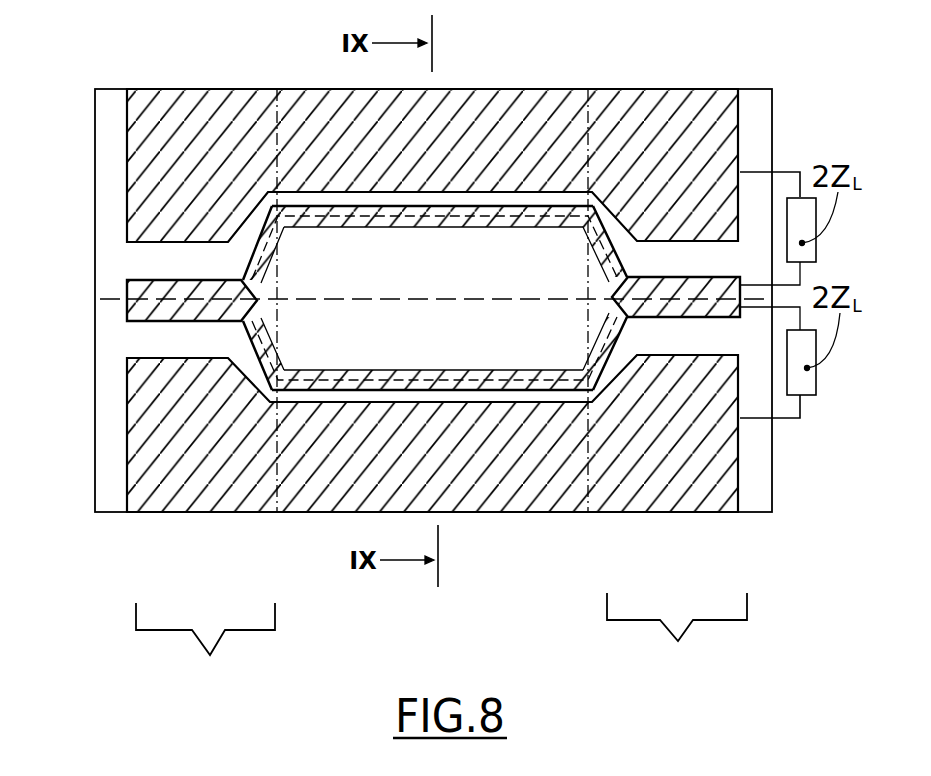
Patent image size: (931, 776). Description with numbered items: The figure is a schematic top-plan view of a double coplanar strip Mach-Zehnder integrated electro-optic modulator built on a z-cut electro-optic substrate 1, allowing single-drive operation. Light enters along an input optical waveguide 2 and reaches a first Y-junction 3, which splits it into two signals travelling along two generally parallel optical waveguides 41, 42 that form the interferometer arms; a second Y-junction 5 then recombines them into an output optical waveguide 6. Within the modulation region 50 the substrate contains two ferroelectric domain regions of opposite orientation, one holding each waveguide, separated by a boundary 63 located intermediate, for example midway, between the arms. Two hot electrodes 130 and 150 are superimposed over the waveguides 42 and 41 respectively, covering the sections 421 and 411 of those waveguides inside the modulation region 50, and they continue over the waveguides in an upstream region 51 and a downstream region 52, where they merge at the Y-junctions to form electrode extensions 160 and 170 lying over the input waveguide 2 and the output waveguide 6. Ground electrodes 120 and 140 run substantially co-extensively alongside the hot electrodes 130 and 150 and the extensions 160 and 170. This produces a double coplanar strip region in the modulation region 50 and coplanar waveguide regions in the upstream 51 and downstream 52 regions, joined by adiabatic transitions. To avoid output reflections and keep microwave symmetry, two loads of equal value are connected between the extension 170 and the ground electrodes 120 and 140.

The substrate 1 is at (776, 108).
The input optical waveguide 2 is at (133, 343).
The first Y-junction 3 is at (146, 307).
The second Y-junction 5 is at (722, 387).
The output optical waveguide 6 is at (746, 295).
The optical waveguide 41 is at (401, 159).
The optical waveguide 42 is at (404, 438).
The modulation region 50 is at (592, 593).
The upstream region 51 is at (205, 646).
The downstream region 52 is at (677, 636).
The boundary 63 is at (563, 300).
The ground electrode 120 is at (635, 497).
The hot electrode 130 is at (463, 377).
The ground electrode 140 is at (645, 103).
The hot electrode 150 is at (472, 222).
The electrode extension 160 is at (146, 293).
The electrode extension 170 is at (695, 312).
The section of waveguide 41 411 is at (333, 218).
The section of waveguide 42 421 is at (338, 378).